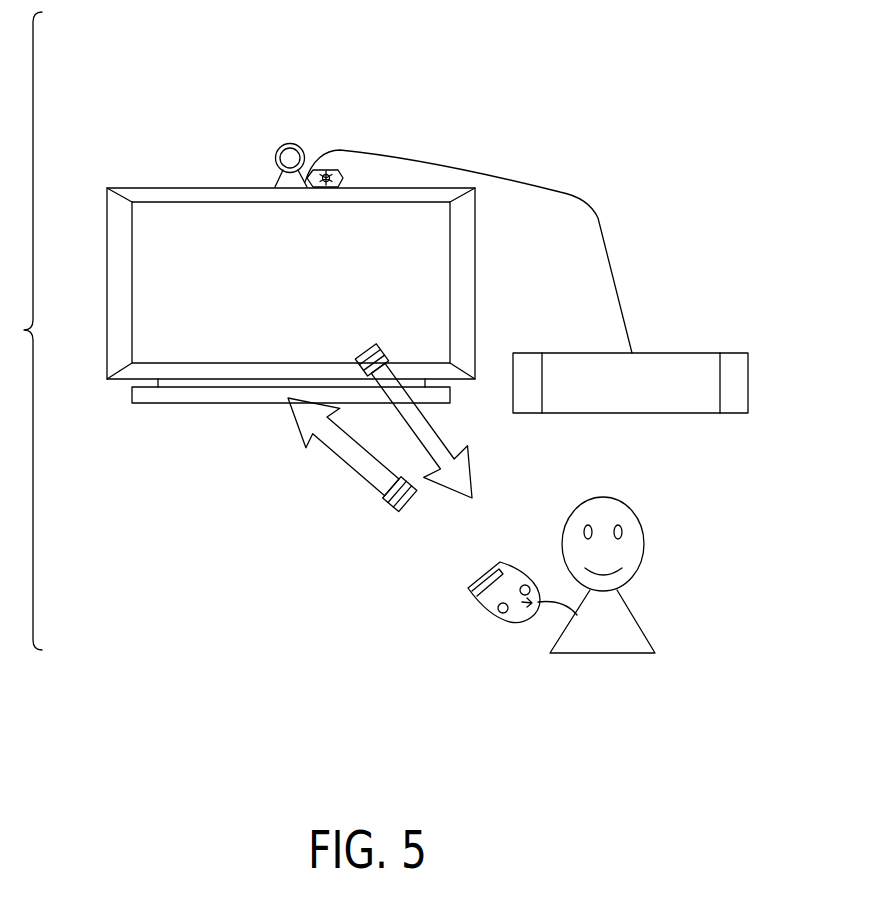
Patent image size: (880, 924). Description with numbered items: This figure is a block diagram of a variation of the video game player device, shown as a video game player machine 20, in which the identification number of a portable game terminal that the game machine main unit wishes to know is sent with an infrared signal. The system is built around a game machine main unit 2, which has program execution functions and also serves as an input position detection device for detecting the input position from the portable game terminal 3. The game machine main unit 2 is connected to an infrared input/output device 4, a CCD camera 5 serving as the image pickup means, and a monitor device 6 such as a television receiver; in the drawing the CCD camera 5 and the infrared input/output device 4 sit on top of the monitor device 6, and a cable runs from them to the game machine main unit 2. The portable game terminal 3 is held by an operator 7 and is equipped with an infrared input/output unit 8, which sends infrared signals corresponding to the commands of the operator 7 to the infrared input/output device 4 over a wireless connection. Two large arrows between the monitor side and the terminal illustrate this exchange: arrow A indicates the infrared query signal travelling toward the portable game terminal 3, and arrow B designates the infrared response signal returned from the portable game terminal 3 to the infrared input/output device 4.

The video game player machine 20 is at (320, 36).
The monitor device 6 is at (107, 296).
The CCD camera 5 is at (277, 153).
The infrared input/output device 4 is at (343, 176).
The game machine main unit 2 is at (593, 353).
The portable game terminal 3 is at (470, 598).
The infrared input/output unit 8 is at (500, 560).
The operator 7 is at (638, 622).
The infrared query signal A is at (514, 423).
The infrared response signal B is at (262, 469).